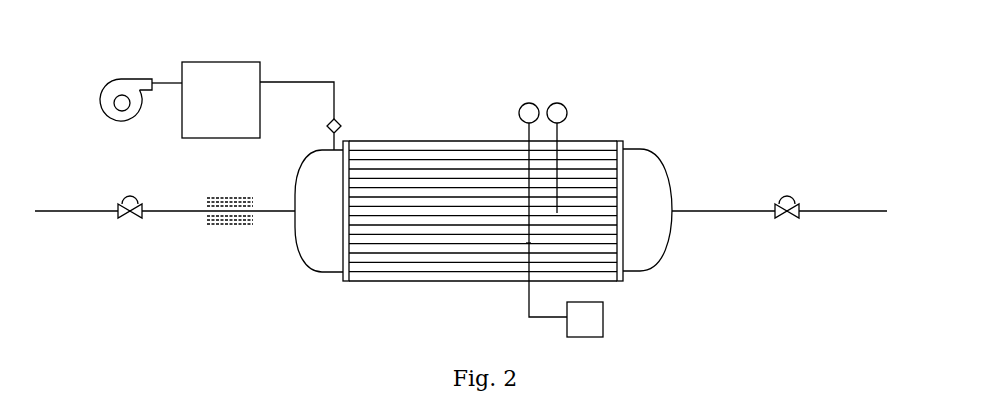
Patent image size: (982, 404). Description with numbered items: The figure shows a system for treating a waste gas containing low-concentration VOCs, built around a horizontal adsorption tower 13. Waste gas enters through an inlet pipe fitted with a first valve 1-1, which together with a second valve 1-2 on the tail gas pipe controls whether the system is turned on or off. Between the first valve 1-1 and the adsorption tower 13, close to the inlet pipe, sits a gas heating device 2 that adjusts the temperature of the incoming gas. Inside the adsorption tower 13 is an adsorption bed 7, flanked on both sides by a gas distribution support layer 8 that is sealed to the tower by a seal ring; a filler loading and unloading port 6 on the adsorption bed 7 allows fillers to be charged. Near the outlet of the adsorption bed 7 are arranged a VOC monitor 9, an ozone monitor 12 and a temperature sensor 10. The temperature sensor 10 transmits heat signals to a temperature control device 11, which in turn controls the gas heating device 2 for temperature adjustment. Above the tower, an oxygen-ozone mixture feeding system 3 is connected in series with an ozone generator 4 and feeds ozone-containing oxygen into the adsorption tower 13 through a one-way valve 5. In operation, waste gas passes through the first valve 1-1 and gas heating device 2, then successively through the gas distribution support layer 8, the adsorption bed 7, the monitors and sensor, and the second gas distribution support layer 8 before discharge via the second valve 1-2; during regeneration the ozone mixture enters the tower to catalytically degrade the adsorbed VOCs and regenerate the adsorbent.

The first valve 1-1 is at (130, 227).
The second valve 1-2 is at (787, 227).
The gas heating device 2 is at (230, 228).
The oxygen-ozone mixture feeding system 3 is at (129, 66).
The ozone generator 4 is at (220, 62).
The one-way valve 5 is at (347, 125).
The filler loading and unloading port 6 is at (432, 140).
The adsorption bed 7 is at (427, 262).
The gas distribution support layer 8 is at (340, 279).
The VOC monitor 9 is at (529, 103).
The temperature sensor 10 is at (528, 245).
The temperature control device 11 is at (613, 320).
The ozone monitor 12 is at (557, 103).
The adsorption tower 13 is at (663, 258).